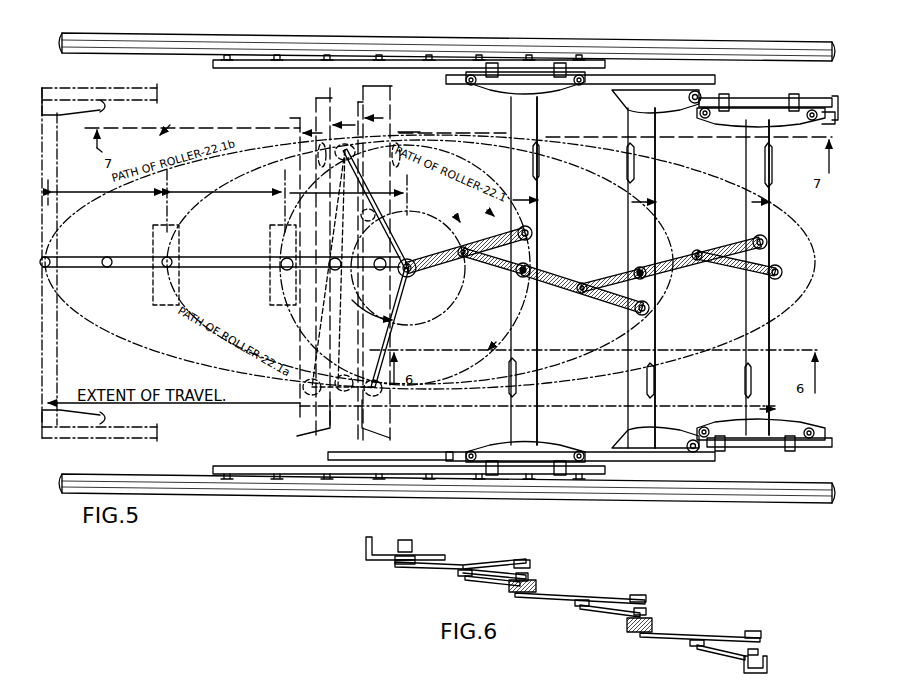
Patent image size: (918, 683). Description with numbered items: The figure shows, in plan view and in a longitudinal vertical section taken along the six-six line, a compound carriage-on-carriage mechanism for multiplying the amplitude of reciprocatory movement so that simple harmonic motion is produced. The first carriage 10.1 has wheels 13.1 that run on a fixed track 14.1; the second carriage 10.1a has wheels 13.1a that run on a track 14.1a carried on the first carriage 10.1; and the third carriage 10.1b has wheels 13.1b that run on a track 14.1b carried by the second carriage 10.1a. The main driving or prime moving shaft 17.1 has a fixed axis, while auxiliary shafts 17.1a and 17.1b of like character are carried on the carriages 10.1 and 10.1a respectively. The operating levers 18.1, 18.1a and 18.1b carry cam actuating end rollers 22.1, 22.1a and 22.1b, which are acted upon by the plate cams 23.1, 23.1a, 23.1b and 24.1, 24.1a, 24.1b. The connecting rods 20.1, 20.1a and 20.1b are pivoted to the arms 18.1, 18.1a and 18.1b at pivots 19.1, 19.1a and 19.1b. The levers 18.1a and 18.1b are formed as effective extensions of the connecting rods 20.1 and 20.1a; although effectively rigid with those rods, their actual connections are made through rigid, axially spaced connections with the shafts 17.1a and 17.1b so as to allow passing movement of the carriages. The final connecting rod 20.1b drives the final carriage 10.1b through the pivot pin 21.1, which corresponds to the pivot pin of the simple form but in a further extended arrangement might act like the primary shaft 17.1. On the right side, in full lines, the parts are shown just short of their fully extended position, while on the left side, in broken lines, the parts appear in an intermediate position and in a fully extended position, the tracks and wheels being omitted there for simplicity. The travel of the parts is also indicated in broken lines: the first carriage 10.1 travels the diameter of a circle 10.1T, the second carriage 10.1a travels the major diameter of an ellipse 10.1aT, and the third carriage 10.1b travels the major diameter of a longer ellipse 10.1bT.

In FIG. 5, the first carriage 10.1 is at (538, 345).
In FIG. 6, the first carriage 10.1 is at (536, 586).
In FIG. 5, the second carriage 10.1a is at (656, 338).
In FIG. 6, the second carriage 10.1a is at (652, 625).
In FIG. 5, the third carriage 10.1b is at (770, 330).
In FIG. 6, the third carriage 10.1b is at (767, 667).
In FIG. 5, the circle 10.1T is at (506, 364).
In FIG. 5, the ellipse 10.1aT is at (616, 372).
In FIG. 5, the longer ellipse 10.1bT is at (670, 368).
In FIG. 5, the wheels 13.1 is at (468, 74).
In FIG. 5, the wheels 13.1a is at (697, 92).
In FIG. 5, the wheels 13.1b is at (807, 110).
In FIG. 5, the fixed track 14.1 is at (396, 60).
In FIG. 5, the track 14.1a is at (643, 78).
In FIG. 5, the track 14.1b is at (755, 98).
In FIG. 5, the main driving shaft 17.1 is at (409, 258).
In FIG. 6, the main driving shaft 17.1 is at (406, 540).
In FIG. 5, the auxiliary shaft 17.1a is at (528, 266).
In FIG. 6, the auxiliary shaft 17.1a is at (529, 578).
In FIG. 5, the auxiliary shaft 17.1b is at (645, 268).
In FIG. 5, the operating lever 18.1 is at (460, 250).
In FIG. 6, the operating lever 18.1 is at (438, 568).
In FIG. 5, the operating lever 18.1a is at (557, 283).
In FIG. 6, the operating lever 18.1a is at (530, 598).
In FIG. 5, the operating lever 18.1b is at (710, 258).
In FIG. 6, the operating lever 18.1b is at (648, 637).
In FIG. 5, the pivot 19.1 is at (460, 258).
In FIG. 6, the pivot 19.1 is at (471, 565).
In FIG. 5, the pivot 19.1a is at (585, 295).
In FIG. 6, the pivot 19.1a is at (620, 599).
In FIG. 5, the pivot 19.1b is at (696, 262).
In FIG. 6, the pivot 19.1b is at (703, 641).
In FIG. 5, the connecting rod 20.1 is at (480, 272).
In FIG. 6, the connecting rod 20.1 is at (466, 578).
In FIG. 5, the connecting rod 20.1a is at (610, 276).
In FIG. 6, the connecting rod 20.1a is at (584, 608).
In FIG. 5, the final connecting rod 20.1b is at (712, 268).
In FIG. 6, the final connecting rod 20.1b is at (700, 650).
In FIG. 5, the pivot pin 21.1 is at (781, 268).
In FIG. 6, the pivot pin 21.1 is at (760, 653).
In FIG. 5, the cam actuating end roller 22.1 is at (530, 230).
In FIG. 6, the cam actuating end roller 22.1 is at (529, 562).
In FIG. 5, the cam actuating end roller 22.1a is at (648, 312).
In FIG. 6, the cam actuating end roller 22.1a is at (643, 603).
In FIG. 5, the cam actuating end roller 22.1b is at (767, 240).
In FIG. 6, the cam actuating end roller 22.1b is at (762, 640).
In FIG. 5, the plate cam 23.1 is at (516, 392).
In FIG. 5, the plate cam 23.1a is at (655, 388).
In FIG. 5, the plate cam 23.1b is at (752, 390).
In FIG. 5, the plate cam 24.1 is at (539, 160).
In FIG. 5, the plate cam 24.1a is at (634, 165).
In FIG. 5, the plate cam 24.1b is at (772, 165).